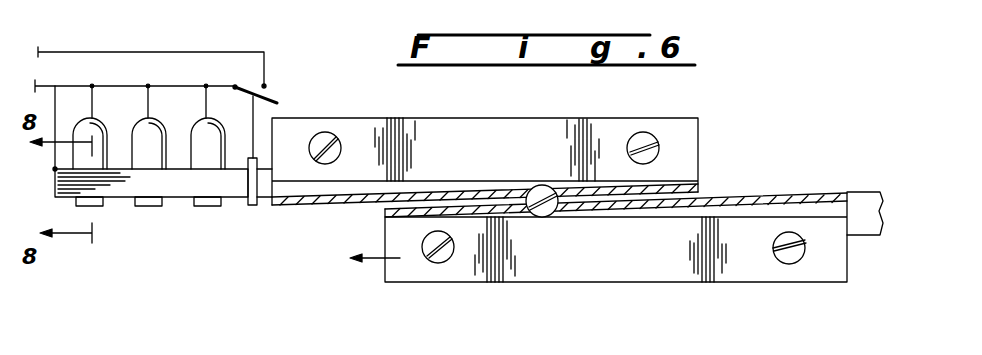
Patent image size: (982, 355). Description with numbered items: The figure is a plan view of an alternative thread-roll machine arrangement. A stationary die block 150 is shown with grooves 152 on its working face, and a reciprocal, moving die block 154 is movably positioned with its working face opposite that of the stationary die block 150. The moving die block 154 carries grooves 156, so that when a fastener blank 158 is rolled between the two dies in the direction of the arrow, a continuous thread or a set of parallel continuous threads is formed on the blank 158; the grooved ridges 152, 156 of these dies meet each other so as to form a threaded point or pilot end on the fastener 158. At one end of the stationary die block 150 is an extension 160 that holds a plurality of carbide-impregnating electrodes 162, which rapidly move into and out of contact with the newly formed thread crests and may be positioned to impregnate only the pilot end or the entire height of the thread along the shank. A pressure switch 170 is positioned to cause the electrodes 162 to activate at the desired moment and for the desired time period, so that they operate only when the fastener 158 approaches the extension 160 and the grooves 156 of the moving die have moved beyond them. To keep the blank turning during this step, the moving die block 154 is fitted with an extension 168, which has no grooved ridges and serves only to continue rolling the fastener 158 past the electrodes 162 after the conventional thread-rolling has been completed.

The stationary die block 150 is at (514, 119).
The grooves 152 is at (284, 200).
The moving die block 154 is at (667, 268).
The grooves 156 is at (780, 198).
The fastener blank 158 is at (545, 217).
The extension 160 is at (55, 183).
The electrodes 162 is at (97, 206).
The extension 168 is at (866, 200).
The pressure switch 170 is at (252, 206).